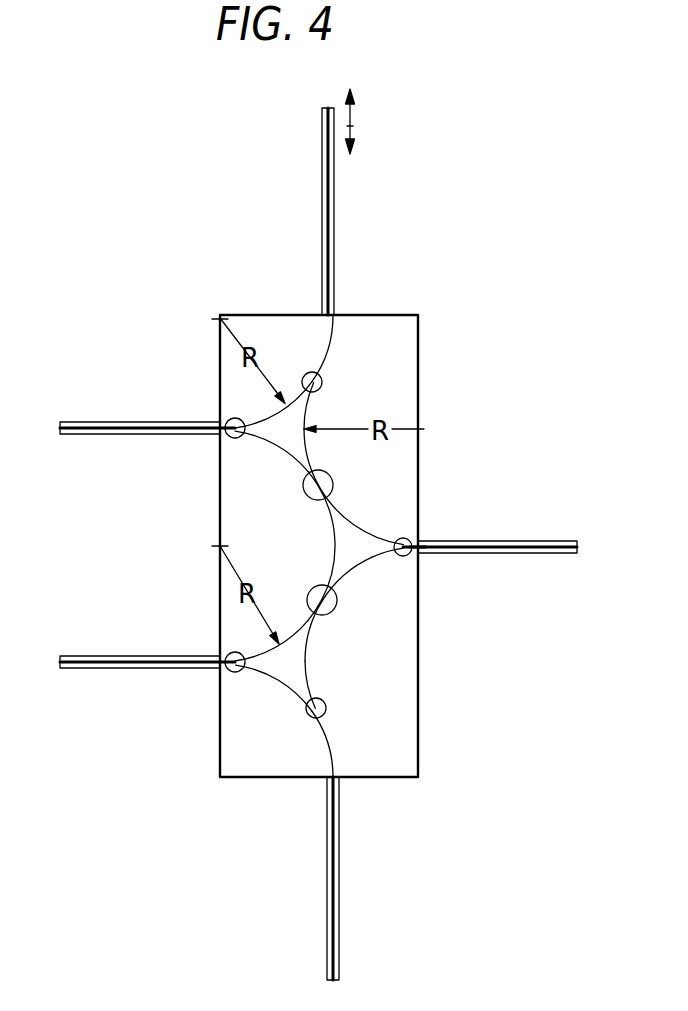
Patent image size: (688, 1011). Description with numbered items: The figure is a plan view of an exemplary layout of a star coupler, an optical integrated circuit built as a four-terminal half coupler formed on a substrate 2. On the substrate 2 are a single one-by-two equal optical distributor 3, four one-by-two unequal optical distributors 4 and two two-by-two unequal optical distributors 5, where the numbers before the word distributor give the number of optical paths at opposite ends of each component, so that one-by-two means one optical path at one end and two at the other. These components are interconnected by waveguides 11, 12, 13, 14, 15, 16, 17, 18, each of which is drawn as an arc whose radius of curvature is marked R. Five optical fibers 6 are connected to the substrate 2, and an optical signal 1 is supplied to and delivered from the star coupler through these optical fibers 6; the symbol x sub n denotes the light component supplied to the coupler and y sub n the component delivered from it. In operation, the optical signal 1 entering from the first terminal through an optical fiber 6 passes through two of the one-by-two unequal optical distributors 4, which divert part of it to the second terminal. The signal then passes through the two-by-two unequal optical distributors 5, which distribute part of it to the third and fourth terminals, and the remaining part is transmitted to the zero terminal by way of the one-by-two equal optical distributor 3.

The optical signal 1 is at (352, 126).
The substrate 2 is at (418, 350).
The 1×2 equal optical distributor 3 is at (403, 557).
The 1×2 unequal optical distributor 4 is at (227, 420).
The 2×2 unequal optical distributor 5 is at (333, 484).
The optical fiber 6 is at (335, 256).
The waveguide 11 is at (328, 340).
The waveguide 12 is at (291, 385).
The waveguide 13 is at (305, 410).
The waveguide 14 is at (309, 450).
The waveguide 15 is at (333, 527).
The waveguide 16 is at (350, 522).
The waveguide 17 is at (372, 557).
The waveguide 18 is at (418, 535).